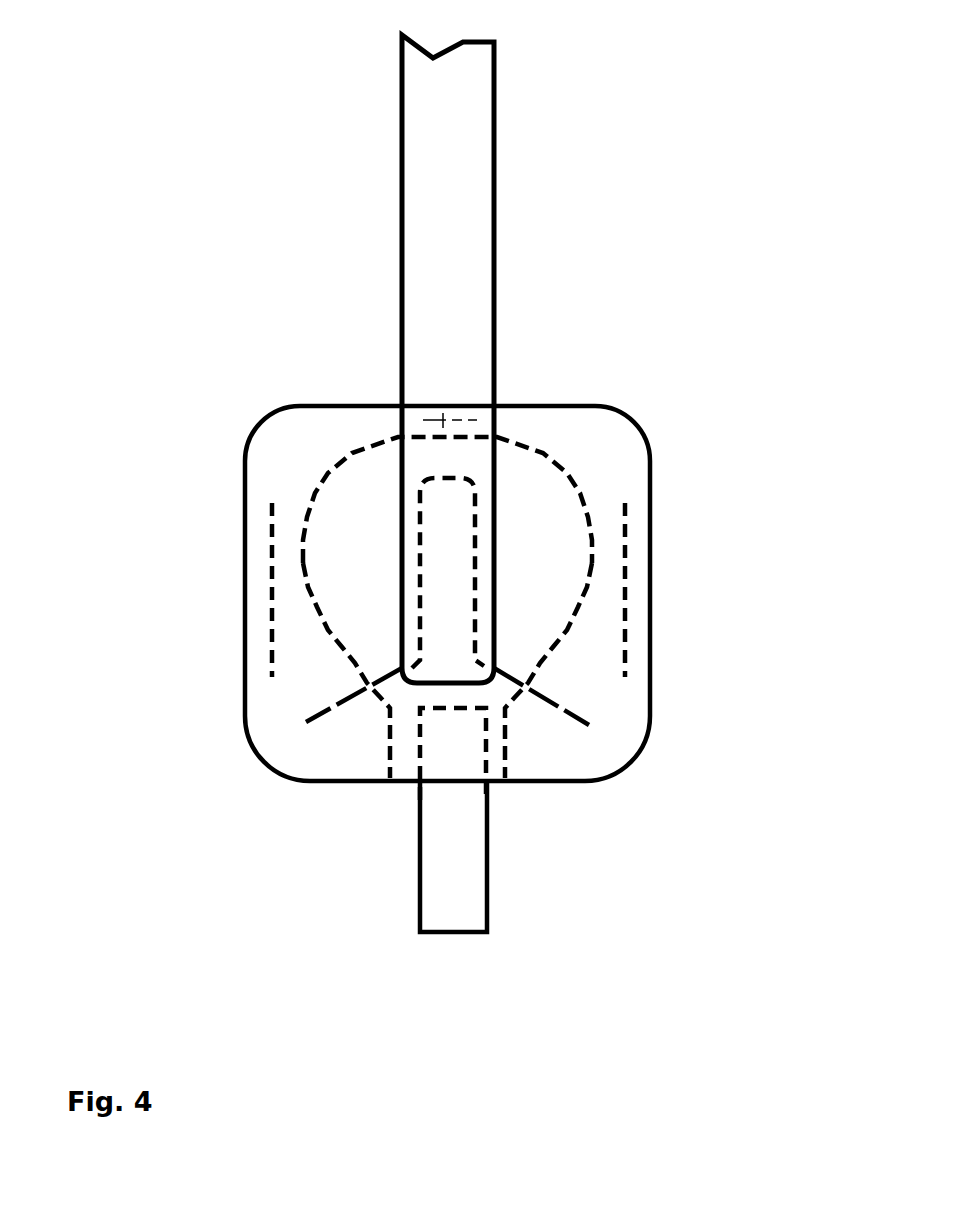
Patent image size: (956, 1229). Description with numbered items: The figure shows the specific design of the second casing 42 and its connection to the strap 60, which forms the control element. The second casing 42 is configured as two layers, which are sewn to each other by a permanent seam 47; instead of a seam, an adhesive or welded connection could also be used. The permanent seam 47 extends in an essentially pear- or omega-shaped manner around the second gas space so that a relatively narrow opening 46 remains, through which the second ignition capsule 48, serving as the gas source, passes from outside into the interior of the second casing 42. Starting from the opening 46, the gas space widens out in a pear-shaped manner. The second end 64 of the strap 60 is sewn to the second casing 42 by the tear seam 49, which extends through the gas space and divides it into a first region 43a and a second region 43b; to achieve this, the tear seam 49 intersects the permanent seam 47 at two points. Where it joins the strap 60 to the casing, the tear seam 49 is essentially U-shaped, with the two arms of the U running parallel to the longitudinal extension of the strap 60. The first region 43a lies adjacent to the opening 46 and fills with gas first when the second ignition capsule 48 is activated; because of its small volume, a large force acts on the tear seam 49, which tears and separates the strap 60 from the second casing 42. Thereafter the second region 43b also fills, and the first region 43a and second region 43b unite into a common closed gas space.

The second casing 42 is at (297, 466).
The strap 60 is at (432, 228).
The second end of the strap 64 is at (497, 585).
The permanent seam 47 is at (578, 490).
The first region of the second gas space 43a is at (500, 693).
The second region of the second gas space 43b is at (537, 622).
The tear seam 49 is at (353, 697).
The opening 46 is at (407, 750).
The second ignition capsule 48 is at (438, 865).